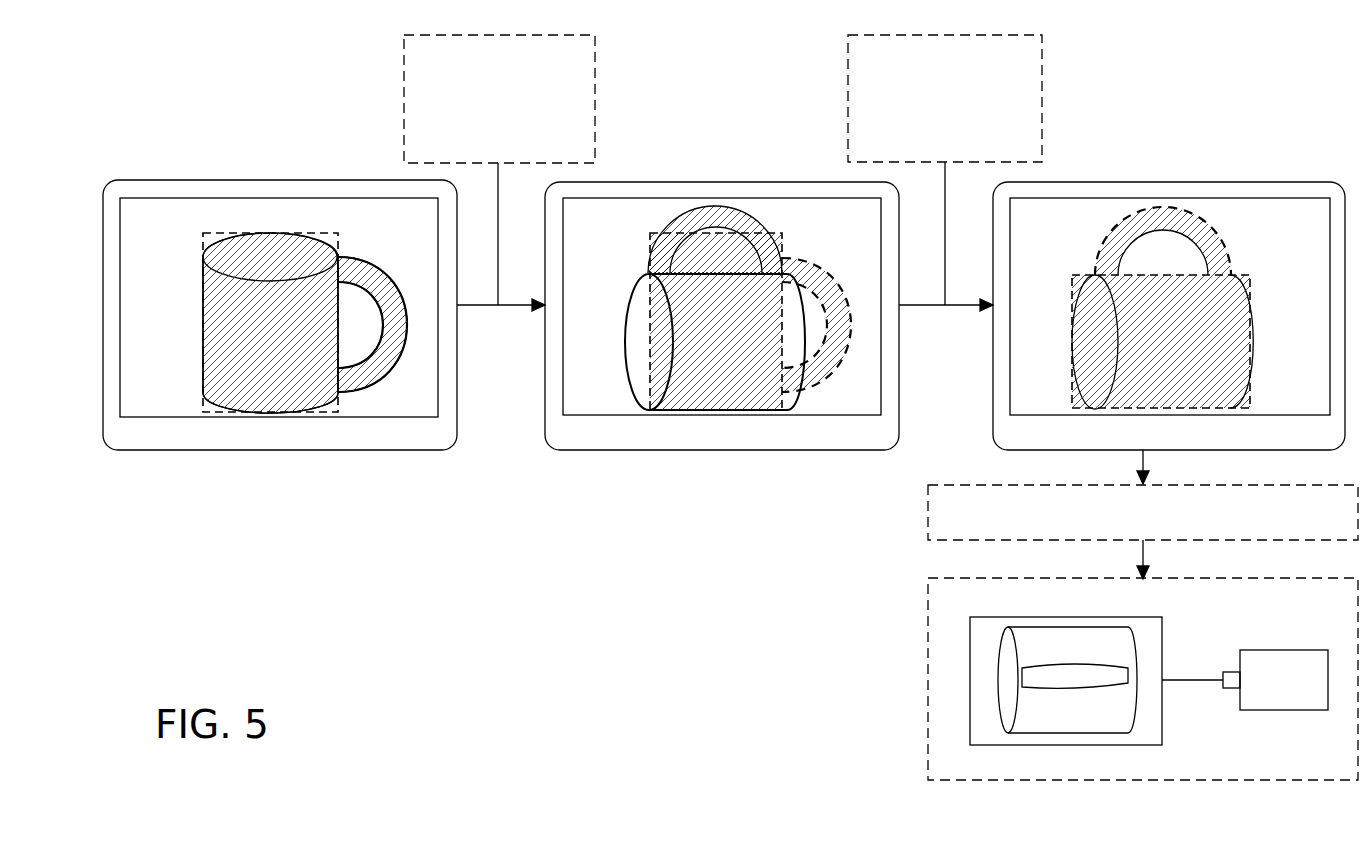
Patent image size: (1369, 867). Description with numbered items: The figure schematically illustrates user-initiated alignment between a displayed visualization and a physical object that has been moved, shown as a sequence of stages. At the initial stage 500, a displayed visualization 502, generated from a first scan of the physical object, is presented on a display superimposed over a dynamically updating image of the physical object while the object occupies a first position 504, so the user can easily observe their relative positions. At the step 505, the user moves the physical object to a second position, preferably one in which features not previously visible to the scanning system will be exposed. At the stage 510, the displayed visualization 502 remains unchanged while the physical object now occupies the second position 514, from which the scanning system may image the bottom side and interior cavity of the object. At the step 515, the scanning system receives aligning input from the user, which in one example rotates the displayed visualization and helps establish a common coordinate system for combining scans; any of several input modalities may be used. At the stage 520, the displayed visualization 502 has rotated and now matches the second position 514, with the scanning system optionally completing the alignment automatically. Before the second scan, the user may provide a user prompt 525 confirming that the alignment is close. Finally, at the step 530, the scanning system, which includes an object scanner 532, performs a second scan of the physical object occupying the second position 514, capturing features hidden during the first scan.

The initial alignment stage 500 is at (211, 120).
The displayed visualization 502 is at (325, 230).
The first position 504 is at (222, 236).
The user moves physical object step 505 is at (499, 99).
The moved object stage 510 is at (756, 121).
The second position 514 is at (640, 280).
The aligning input step 515 is at (945, 98).
The aligned stage 520 is at (1205, 128).
The user prompt 525 is at (1143, 512).
The second scan step 530 is at (1143, 679).
The object scanner 532 is at (1283, 650).